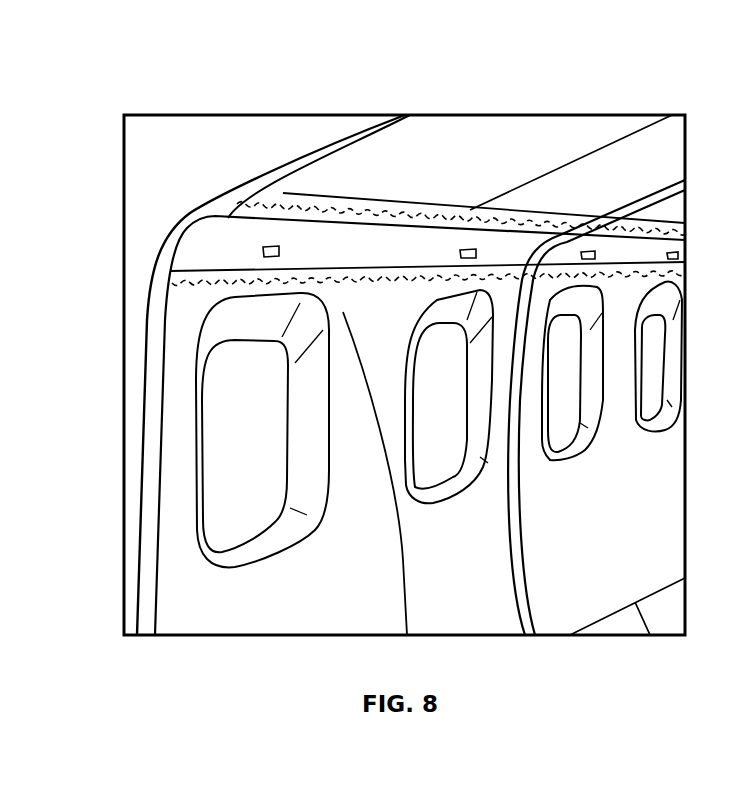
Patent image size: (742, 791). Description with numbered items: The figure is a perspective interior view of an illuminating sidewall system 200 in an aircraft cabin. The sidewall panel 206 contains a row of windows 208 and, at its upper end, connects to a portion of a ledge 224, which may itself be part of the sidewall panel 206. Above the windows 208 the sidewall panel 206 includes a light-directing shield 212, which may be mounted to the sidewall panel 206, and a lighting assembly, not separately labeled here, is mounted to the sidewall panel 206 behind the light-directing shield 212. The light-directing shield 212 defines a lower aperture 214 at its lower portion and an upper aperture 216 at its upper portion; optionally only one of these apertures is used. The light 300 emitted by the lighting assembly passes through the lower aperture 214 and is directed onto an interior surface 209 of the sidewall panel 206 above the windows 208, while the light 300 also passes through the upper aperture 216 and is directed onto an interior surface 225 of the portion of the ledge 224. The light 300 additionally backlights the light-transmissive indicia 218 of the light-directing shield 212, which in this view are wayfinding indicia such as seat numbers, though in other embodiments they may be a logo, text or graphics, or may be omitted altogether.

The illuminating sidewall system 200 is at (138, 82).
The sidewall panel 206 is at (132, 602).
The window 208 is at (222, 446).
The interior surface 209 is at (407, 636).
The light-directing shield 212 is at (197, 258).
The lower aperture 214 is at (207, 273).
The upper aperture 216 is at (227, 215).
The light-transmissive indicia 218 is at (283, 249).
The ledge 224 is at (308, 177).
The interior surface 225 is at (283, 193).
The light 300 is at (267, 212).